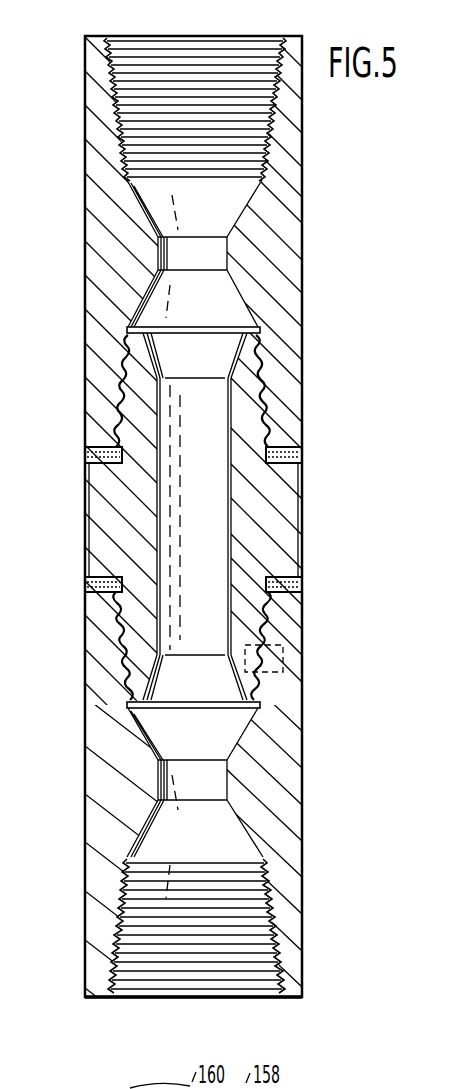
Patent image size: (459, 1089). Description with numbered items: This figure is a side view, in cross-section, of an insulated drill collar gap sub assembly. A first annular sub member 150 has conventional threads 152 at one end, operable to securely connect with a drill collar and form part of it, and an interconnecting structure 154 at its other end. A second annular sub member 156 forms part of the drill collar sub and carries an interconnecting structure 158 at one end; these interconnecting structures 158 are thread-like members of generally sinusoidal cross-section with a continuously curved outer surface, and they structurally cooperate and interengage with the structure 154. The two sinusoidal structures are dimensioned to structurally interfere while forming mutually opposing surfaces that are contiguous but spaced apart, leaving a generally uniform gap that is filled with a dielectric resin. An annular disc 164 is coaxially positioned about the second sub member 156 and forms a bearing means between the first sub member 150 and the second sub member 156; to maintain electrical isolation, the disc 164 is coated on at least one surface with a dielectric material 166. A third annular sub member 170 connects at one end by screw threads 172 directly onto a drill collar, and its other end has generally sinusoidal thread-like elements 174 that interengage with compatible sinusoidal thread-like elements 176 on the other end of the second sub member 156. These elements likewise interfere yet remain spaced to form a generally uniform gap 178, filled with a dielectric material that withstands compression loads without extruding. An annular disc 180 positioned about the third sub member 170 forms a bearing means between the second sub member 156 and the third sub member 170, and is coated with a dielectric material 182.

The first annular sub member 150 is at (303, 760).
The conventional threads 152 is at (126, 985).
The interconnecting structure 154 is at (122, 668).
The second annular sub member 156 is at (97, 525).
The interconnecting structure 158 is at (160, 625).
The annular disc 164 is at (85, 589).
The dielectric material 166 is at (302, 588).
The third annular sub member 170 is at (303, 195).
The screw threads 172 is at (113, 67).
The sinusoidal thread-like elements 174 is at (122, 372).
The sinusoidal thread-like elements 176 is at (170, 372).
The gap 178 is at (270, 362).
The annular disc 180 is at (303, 456).
The dielectric material 182 is at (85, 455).